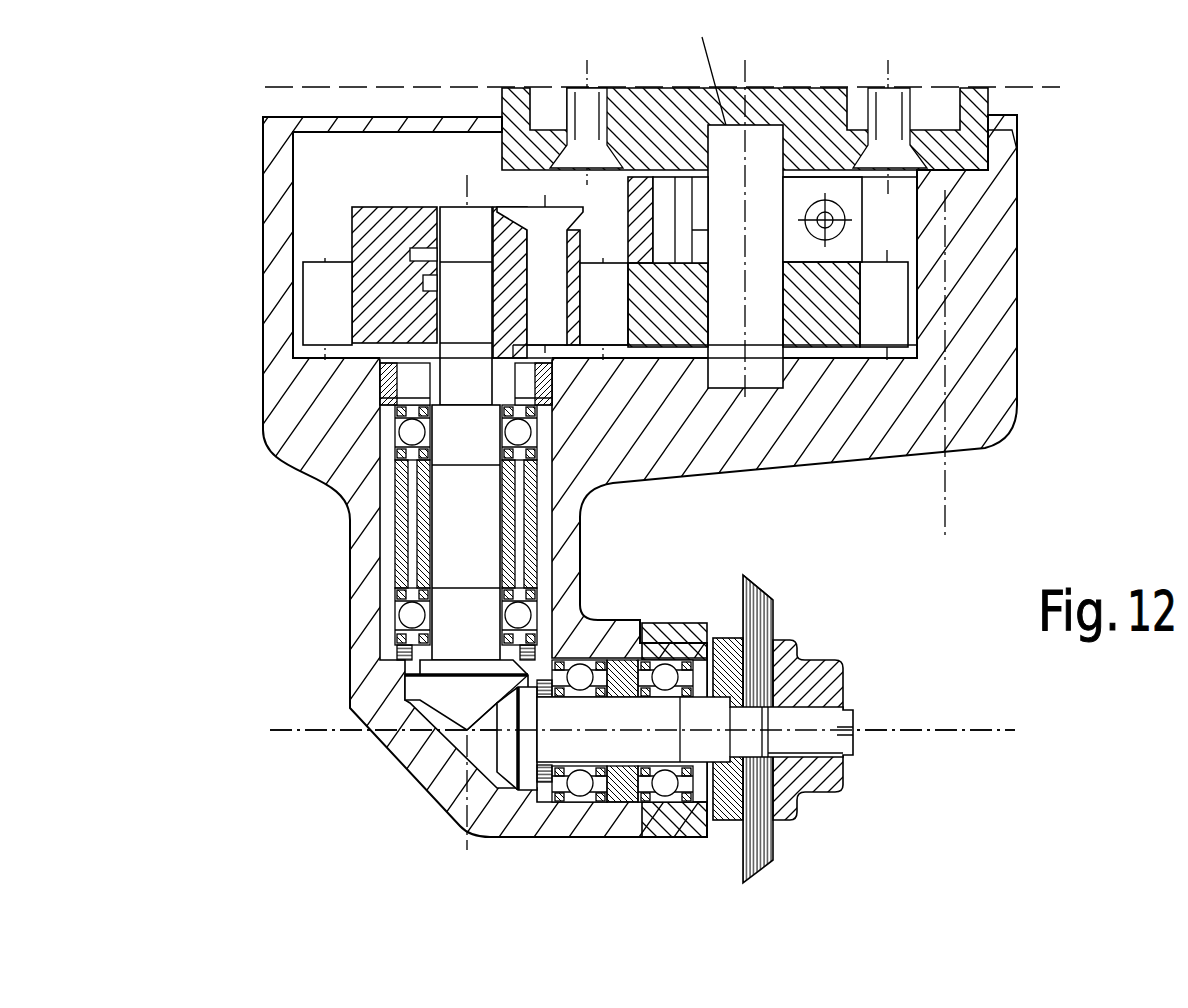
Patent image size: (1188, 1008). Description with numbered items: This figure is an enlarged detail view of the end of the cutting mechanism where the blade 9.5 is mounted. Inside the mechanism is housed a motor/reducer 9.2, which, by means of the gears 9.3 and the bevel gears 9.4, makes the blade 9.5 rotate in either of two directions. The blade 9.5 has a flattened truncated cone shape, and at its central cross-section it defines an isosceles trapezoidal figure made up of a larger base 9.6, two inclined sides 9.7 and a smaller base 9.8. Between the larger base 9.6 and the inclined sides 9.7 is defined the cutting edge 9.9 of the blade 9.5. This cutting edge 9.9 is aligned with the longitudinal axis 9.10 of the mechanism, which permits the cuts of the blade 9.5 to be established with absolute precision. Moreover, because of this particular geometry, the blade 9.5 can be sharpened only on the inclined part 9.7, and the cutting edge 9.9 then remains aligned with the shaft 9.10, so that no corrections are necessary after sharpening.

The motor/reducer 9.2 is at (826, 100).
The gears 9.3 is at (315, 296).
The bevel gears 9.4 is at (505, 747).
The blade 9.5 is at (781, 701).
The larger base 9.6 is at (743, 608).
The inclined sides 9.7 is at (760, 590).
The smaller base 9.8 is at (777, 615).
The cutting edge 9.9 is at (745, 577).
The longitudinal axis 9.10 is at (745, 68).